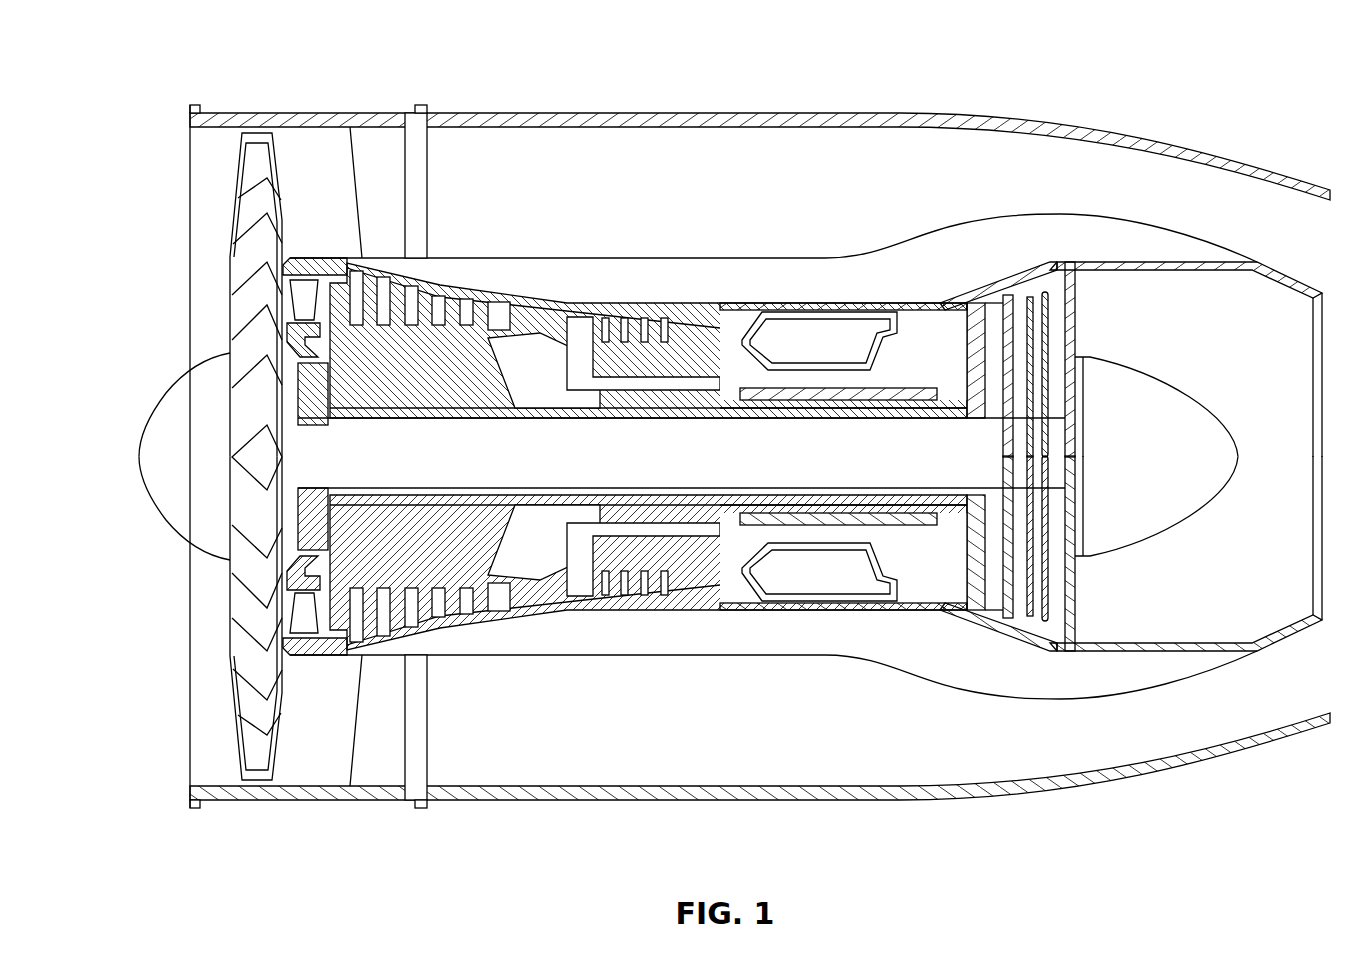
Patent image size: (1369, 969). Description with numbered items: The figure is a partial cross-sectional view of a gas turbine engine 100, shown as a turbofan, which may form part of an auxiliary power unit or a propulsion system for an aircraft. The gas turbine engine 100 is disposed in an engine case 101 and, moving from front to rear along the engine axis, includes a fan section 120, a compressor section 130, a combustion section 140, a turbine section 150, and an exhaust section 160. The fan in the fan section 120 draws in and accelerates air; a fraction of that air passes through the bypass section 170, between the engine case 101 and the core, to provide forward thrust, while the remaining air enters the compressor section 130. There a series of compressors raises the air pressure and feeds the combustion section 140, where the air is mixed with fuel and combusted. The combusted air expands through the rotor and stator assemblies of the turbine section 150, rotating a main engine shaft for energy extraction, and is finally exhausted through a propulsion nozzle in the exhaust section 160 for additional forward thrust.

The gas turbine engine 100 is at (732, 449).
The engine case 101 is at (538, 113).
The bypass section 170 is at (708, 152).
The fan section 120 is at (135, 815).
The compressor section 130 is at (293, 815).
The combustion section 140 is at (683, 815).
The turbine section 150 is at (915, 815).
The exhaust section 160 is at (1110, 815).